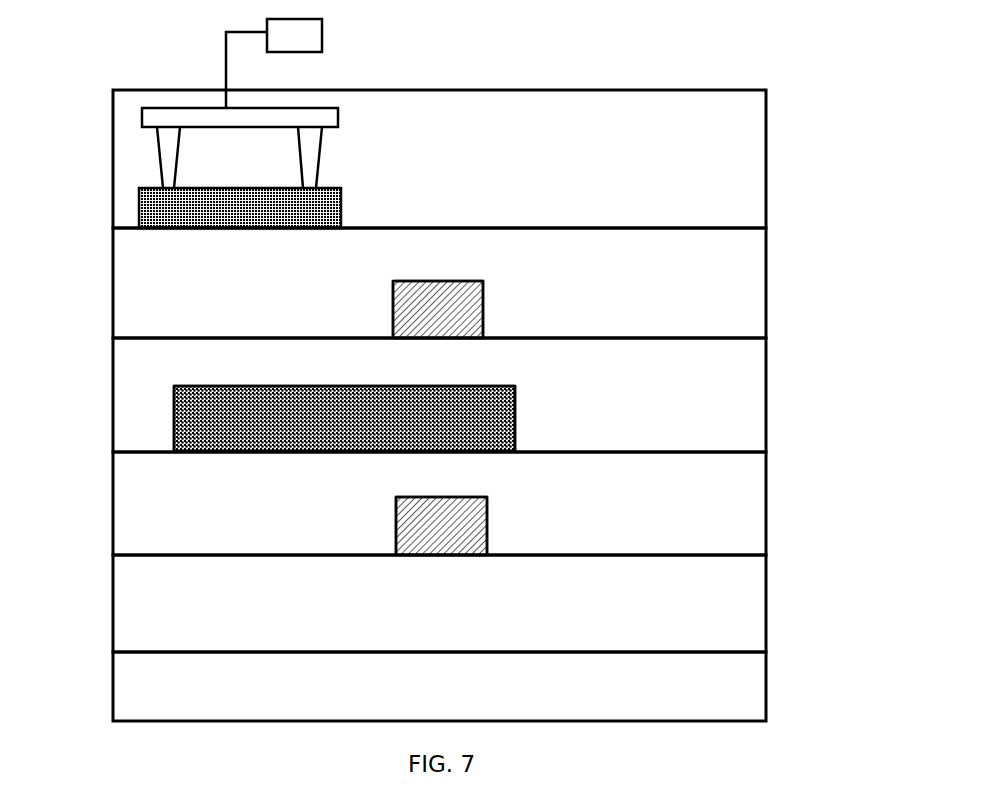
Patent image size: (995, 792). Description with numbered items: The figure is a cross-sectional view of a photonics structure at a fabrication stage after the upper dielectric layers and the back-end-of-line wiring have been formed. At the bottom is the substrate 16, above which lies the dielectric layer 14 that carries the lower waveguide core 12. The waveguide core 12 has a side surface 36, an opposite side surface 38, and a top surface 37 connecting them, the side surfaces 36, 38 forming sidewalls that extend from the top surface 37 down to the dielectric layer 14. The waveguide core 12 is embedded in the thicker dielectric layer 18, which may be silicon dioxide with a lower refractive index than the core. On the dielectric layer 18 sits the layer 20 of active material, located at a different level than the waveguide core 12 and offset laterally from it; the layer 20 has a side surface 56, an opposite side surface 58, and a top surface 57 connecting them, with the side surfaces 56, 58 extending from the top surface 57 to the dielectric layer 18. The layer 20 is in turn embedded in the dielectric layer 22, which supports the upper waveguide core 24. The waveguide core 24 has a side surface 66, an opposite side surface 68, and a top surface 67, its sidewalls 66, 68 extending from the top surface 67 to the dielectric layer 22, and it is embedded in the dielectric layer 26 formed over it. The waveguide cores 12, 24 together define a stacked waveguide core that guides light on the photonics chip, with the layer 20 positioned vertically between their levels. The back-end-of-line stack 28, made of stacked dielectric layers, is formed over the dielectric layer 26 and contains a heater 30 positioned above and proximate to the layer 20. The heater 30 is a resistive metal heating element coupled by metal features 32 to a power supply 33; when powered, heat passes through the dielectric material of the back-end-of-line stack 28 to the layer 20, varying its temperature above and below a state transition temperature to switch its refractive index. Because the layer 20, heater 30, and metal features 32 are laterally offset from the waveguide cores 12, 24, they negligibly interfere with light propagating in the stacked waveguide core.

The waveguide core 12 is at (428, 515).
The dielectric layer 14 is at (727, 613).
The substrate 16 is at (727, 684).
The dielectric layer 18 is at (720, 499).
The layer 20 is at (483, 402).
The dielectric layer 22 is at (718, 384).
The waveguide core 24 is at (425, 298).
The dielectric layer 26 is at (716, 284).
The back-end-of-line stack 28 is at (715, 185).
The heater 30 is at (313, 212).
The metal features 32 is at (310, 155).
The power supply 33 is at (297, 39).
The side surface 36 is at (395, 540).
The top surface 37 is at (438, 495).
The side surface 38 is at (487, 530).
The side surface 56 is at (173, 434).
The top surface 57 is at (183, 386).
The side surface 58 is at (515, 435).
The side surface 66 is at (393, 325).
The top surface 67 is at (437, 280).
The side surface 68 is at (485, 312).